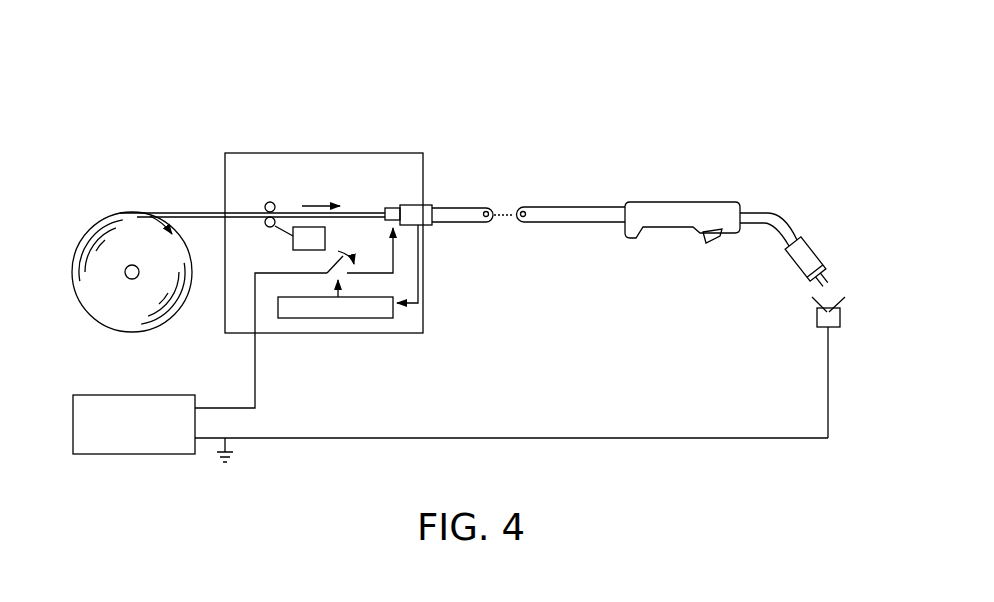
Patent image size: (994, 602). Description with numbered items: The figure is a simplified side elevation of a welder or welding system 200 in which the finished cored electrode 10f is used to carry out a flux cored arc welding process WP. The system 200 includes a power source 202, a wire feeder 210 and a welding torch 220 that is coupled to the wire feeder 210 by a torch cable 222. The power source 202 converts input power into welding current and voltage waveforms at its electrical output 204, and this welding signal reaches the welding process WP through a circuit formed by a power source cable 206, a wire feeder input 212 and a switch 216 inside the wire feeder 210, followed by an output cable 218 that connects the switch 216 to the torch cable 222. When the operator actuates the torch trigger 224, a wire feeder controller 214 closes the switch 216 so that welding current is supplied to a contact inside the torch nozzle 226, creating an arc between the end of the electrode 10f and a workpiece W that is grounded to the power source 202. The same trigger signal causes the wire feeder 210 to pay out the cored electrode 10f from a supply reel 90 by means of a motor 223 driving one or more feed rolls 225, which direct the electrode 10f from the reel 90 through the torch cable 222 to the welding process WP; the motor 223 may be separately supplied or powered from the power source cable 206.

The welding system 200 is at (721, 104).
The wire feeder 210 is at (287, 153).
The feed rolls 225 is at (256, 196).
The motor 223 is at (291, 249).
The finished cored electrode 10f is at (172, 212).
The supply reel 90 is at (136, 332).
The wire feeder input 212 is at (246, 343).
The power source cable 206 is at (257, 380).
The switch 216 is at (366, 257).
The output cable 218 is at (395, 257).
The wire feeder controller 214 is at (342, 318).
The power source 202 is at (150, 456).
The electrical output 204 is at (205, 418).
The torch cable 222 is at (452, 205).
The welding torch 220 is at (686, 202).
The torch trigger 224 is at (718, 240).
The torch nozzle 226 is at (800, 266).
The welding process WP is at (790, 321).
The workpiece W is at (813, 298).